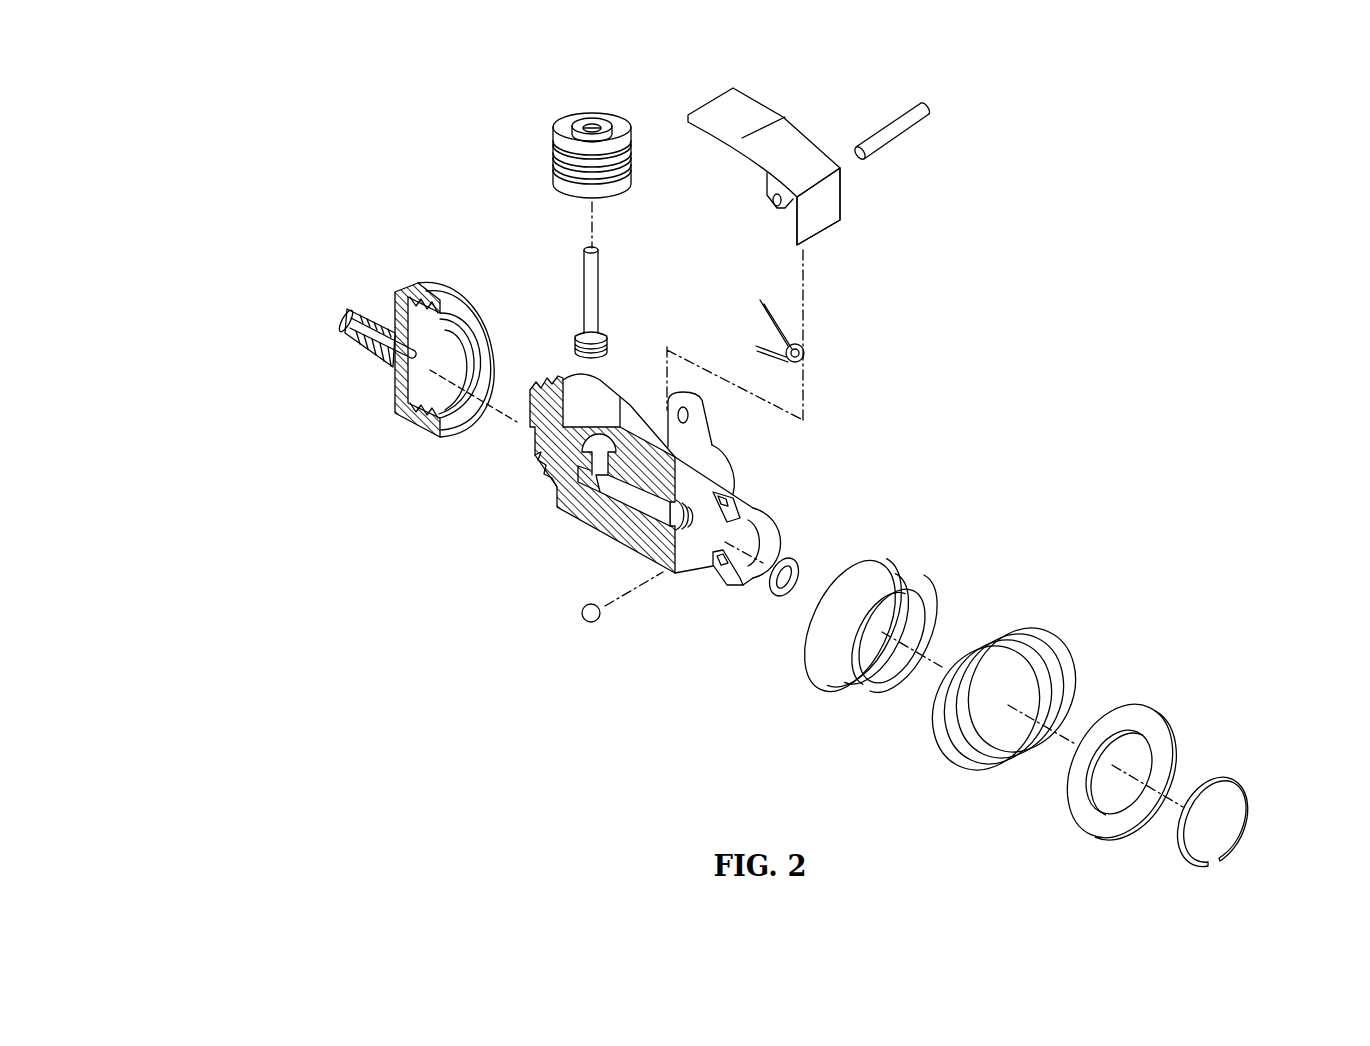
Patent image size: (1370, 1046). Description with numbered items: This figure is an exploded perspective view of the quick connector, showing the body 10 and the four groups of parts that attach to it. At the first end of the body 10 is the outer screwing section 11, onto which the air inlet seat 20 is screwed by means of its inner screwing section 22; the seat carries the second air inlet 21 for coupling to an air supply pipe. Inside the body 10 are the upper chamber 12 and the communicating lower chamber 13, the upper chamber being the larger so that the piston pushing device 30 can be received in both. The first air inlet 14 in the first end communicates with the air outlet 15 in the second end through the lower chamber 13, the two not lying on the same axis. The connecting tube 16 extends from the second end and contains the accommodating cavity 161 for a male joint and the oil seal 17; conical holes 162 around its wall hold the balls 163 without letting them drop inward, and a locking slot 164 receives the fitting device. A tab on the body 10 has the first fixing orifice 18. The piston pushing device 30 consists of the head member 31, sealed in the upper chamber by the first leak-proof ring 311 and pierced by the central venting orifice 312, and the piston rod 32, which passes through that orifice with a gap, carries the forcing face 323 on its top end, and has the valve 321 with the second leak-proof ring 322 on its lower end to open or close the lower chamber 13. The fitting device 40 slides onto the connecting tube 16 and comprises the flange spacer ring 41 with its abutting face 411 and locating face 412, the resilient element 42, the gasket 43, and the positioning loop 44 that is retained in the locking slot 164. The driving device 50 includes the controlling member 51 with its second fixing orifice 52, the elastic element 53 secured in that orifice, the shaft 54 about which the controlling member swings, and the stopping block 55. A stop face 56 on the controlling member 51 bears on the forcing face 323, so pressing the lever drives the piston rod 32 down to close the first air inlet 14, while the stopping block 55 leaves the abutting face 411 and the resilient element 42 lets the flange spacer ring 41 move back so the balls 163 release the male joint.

The body 10 is at (477, 668).
The outer screwing section 11 is at (560, 500).
The upper chamber 12 is at (594, 472).
The lower chamber 13 is at (590, 410).
The first air inlet 14 is at (533, 470).
The air outlet 15 is at (637, 492).
The connecting tube 16 is at (730, 487).
The accommodating cavity 161 is at (720, 542).
The holes 162 is at (727, 565).
The balls 163 is at (590, 622).
The locking slot 164 is at (747, 510).
The oil seal 17 is at (778, 598).
The first fixing orifice 18 is at (684, 408).
The air inlet seat 20 is at (253, 370).
The second air inlet 21 is at (347, 320).
The inner screwing section 22 is at (443, 430).
The piston pushing device 30 is at (420, 262).
The head member 31 is at (453, 112).
The first leak-proof ring 311 is at (577, 162).
The venting orifice 312 is at (588, 128).
The piston rod 32 is at (483, 310).
The valve 321 is at (578, 350).
The second leak-proof ring 322 is at (577, 338).
The forcing face 323 is at (586, 252).
The fitting device 40 is at (978, 467).
The flange spacer ring 41 is at (890, 562).
The abutting face 411 is at (863, 560).
The locating face 412 is at (925, 573).
The resilient element 42 is at (1023, 647).
The gasket 43 is at (1157, 727).
The positioning loop 44 is at (1250, 803).
The driving device 50 is at (1067, 222).
The controlling member 51 is at (813, 165).
The second fixing orifice 52 is at (773, 203).
The elastic element 53 is at (806, 350).
The shaft 54 is at (910, 125).
The stopping block 55 is at (840, 202).
The stop face 56 is at (712, 137).